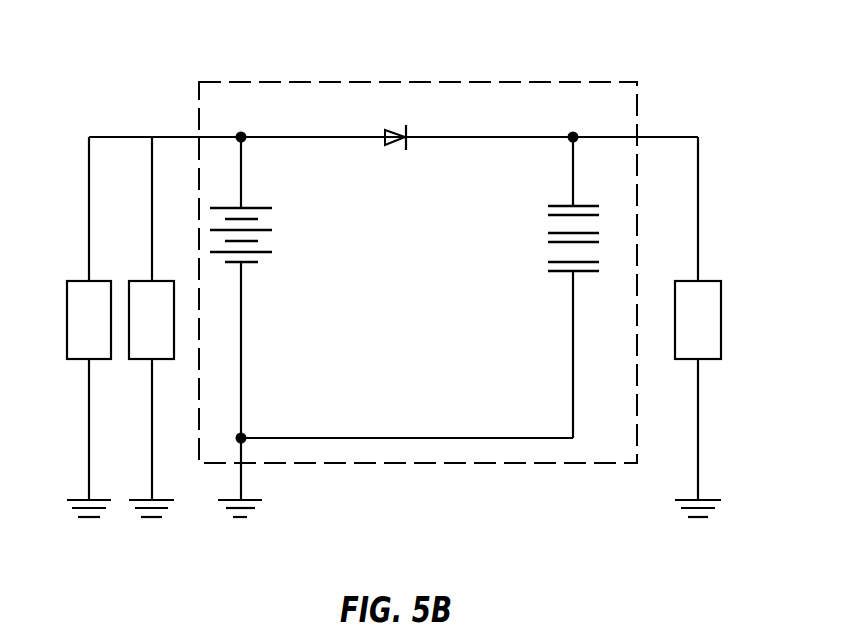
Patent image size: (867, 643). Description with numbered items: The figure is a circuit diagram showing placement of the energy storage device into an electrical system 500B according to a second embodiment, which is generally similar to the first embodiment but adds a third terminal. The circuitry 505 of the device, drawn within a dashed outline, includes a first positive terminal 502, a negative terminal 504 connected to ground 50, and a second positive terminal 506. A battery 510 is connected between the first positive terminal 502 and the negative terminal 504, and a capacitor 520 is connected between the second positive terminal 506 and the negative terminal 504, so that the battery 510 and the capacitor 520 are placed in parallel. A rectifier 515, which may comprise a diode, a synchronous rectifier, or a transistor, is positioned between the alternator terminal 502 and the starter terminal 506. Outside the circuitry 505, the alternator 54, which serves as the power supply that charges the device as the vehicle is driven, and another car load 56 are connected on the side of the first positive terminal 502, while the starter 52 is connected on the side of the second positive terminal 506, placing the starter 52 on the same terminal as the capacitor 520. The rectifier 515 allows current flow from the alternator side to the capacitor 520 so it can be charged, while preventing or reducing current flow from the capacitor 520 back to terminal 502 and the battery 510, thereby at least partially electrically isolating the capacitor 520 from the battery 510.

The electrical system 500B is at (637, 103).
The first positive terminal 502 is at (245, 136).
The negative terminal 504 is at (244, 436).
The circuitry 505 is at (323, 139).
The second positive terminal 506 is at (569, 135).
The battery 510 is at (255, 278).
The rectifier 515 is at (408, 147).
The capacitor 520 is at (548, 292).
The ground 50 is at (253, 500).
The starter 52 is at (710, 331).
The alternator 54 is at (102, 331).
The car load 56 is at (164, 331).